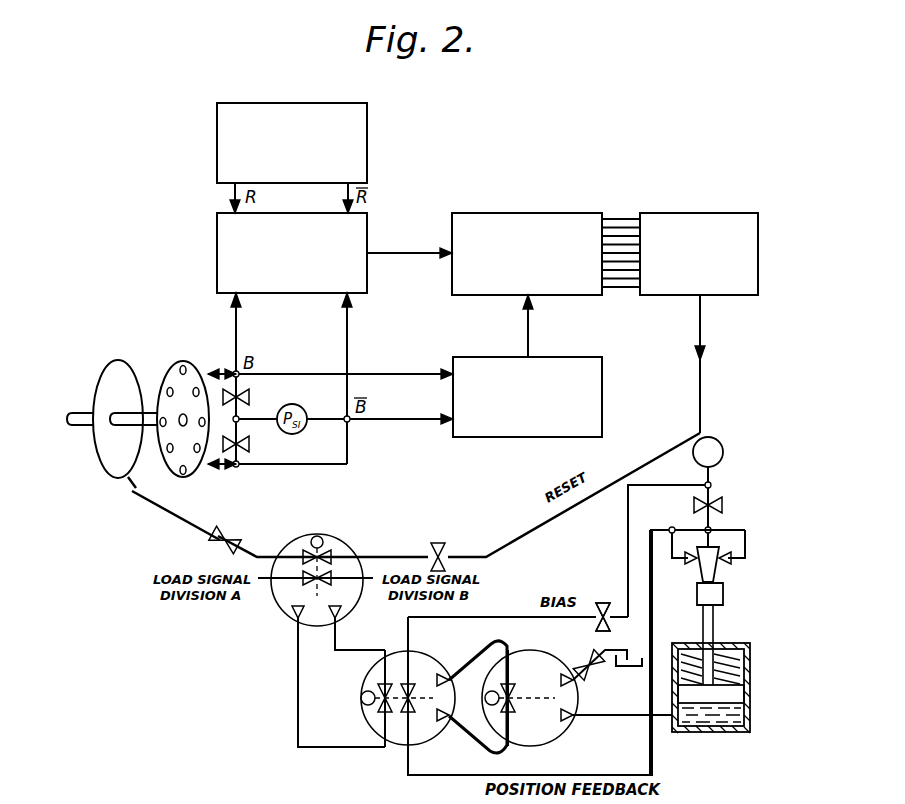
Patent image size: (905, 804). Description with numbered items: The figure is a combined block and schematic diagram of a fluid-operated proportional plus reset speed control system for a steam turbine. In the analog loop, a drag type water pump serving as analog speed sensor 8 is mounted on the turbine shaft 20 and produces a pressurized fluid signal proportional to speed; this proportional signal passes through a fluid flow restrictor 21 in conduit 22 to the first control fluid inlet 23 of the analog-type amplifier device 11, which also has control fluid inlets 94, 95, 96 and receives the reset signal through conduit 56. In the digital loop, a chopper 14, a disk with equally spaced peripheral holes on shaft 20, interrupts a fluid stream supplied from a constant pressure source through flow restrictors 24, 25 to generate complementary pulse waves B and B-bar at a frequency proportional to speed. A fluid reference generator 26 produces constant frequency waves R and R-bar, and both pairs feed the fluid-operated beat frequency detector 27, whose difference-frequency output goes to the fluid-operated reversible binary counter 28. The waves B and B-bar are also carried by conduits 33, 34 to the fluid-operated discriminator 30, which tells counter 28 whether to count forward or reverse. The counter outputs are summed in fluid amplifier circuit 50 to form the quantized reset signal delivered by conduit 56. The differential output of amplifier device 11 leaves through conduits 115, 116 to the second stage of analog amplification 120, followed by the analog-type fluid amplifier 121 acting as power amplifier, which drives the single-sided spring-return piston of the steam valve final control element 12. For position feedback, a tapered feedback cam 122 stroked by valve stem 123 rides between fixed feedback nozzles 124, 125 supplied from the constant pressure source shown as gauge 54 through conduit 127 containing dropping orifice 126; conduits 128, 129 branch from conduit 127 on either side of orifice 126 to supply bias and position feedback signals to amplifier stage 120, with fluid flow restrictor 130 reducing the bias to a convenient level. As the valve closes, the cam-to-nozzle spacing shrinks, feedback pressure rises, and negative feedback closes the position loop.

The analog speed sensor 8 is at (95, 447).
The analog-type amplifier device 11 is at (314, 568).
The final control element 12 is at (733, 651).
The chopper 14 is at (171, 364).
The shaft 20 is at (78, 413).
The fluid flow restrictor 21 is at (238, 536).
The conduit 22 is at (180, 514).
The first control fluid inlet 23 is at (290, 555).
The flow restrictor 24 is at (250, 397).
The flow restrictor 25 is at (250, 447).
The fluid reference generator 26 is at (217, 113).
The fluid-operated beat frequency detector 27 is at (217, 235).
The fluid-operated reversible binary counter 28 is at (470, 213).
The fluid-operated discriminator 30 is at (488, 437).
The conduit 33 is at (400, 373).
The conduit 34 is at (408, 421).
The fluid amplifier circuit 50 is at (732, 213).
The pressure gauge 54 is at (708, 452).
The conduit 56 is at (703, 381).
The control fluid inlet 94 is at (280, 582).
The control fluid inlet 95 is at (345, 557).
The control fluid inlet 96 is at (351, 600).
The conduit 115 is at (343, 650).
The conduit 116 is at (298, 717).
The second stage of analog amplification 120 is at (397, 746).
The analog-type fluid amplifier 121 is at (561, 734).
The feedback cam 122 is at (715, 572).
The valve stem 123 is at (714, 625).
The feedback nozzle 124 is at (694, 565).
The feedback nozzle 125 is at (732, 562).
The dropping orifice 126 is at (723, 506).
The conduit 127 is at (712, 490).
The conduit 128 is at (679, 479).
The conduit 129 is at (652, 625).
The fluid flow restrictor 130 is at (603, 603).